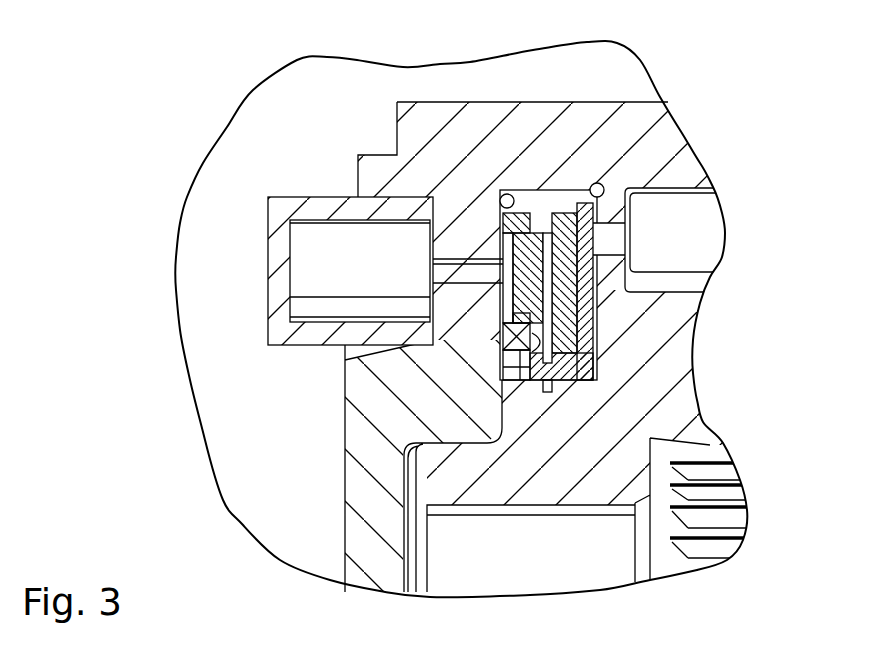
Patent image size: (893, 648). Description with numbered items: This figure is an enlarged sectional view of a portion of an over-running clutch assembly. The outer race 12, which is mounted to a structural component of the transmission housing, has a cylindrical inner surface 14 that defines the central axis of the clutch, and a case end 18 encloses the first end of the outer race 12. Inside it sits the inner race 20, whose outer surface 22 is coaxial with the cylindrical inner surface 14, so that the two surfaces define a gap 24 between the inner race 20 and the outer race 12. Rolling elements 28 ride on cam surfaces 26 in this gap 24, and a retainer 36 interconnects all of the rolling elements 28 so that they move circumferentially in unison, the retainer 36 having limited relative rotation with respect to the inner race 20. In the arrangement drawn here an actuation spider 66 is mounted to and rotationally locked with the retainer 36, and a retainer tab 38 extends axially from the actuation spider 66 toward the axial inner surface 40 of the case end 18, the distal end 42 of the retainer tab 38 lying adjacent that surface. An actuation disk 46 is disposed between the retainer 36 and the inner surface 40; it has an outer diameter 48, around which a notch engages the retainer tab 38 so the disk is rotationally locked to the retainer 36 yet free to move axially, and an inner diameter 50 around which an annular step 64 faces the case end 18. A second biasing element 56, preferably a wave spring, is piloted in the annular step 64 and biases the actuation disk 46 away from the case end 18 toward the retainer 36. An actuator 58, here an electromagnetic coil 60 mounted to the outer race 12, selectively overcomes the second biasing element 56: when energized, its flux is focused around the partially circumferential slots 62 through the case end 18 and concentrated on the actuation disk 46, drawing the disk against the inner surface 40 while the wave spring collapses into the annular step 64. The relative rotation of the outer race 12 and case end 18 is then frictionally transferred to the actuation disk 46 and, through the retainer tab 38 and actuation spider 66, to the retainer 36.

The outer race 12 is at (610, 115).
The cylindrical inner surface 14 is at (600, 188).
The case end 18 is at (360, 498).
The inner race 20 is at (683, 407).
The outer surface 22 is at (610, 308).
The gap 24 is at (617, 278).
The cam surfaces 26 is at (528, 280).
The rolling elements 28 is at (703, 243).
The retainer 36 is at (608, 238).
The retainer tab 38 is at (547, 240).
The axial inner surface 40 is at (548, 220).
The distal end 42 is at (502, 198).
The actuation disk 46 is at (528, 300).
The outer diameter 48 is at (520, 200).
The inner diameter 50 is at (525, 385).
The second biasing element 56 is at (512, 330).
The actuator 58 is at (303, 243).
The electromagnetic coil 60 is at (305, 280).
The partially circumferential slots 62 is at (457, 277).
The annular step 64 is at (505, 350).
The actuation spider 66 is at (585, 210).